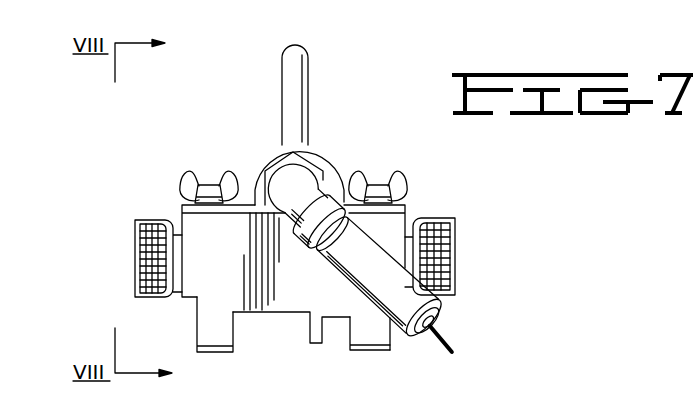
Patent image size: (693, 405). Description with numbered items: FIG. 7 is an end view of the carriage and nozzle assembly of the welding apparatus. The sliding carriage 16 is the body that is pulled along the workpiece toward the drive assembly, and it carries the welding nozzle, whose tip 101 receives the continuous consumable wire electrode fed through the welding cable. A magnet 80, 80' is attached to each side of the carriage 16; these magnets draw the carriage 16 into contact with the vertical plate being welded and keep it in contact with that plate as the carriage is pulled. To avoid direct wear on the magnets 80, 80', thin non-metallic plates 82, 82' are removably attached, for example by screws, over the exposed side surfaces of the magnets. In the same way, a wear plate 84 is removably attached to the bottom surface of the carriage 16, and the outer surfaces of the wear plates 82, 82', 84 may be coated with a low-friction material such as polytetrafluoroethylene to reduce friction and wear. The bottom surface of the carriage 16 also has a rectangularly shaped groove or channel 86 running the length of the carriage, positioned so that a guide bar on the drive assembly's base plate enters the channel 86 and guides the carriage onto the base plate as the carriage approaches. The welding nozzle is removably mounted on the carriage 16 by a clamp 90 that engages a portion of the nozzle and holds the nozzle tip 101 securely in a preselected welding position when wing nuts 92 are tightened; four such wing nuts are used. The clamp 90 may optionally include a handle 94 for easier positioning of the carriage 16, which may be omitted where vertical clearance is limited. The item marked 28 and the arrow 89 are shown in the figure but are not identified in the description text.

The carriage 16 is at (318, 295).
The cylinder 28 is at (338, 195).
The magnet 80 is at (124, 258).
The magnet 80' is at (464, 256).
The non-metallic plate 82 is at (126, 257).
The non-metallic plate 82' is at (464, 256).
The wear plate 84 is at (218, 353).
The channel 86 is at (351, 350).
The coupling 89 is at (342, 155).
The clamp 90 is at (310, 153).
The wing nuts 92 is at (190, 180).
The handle 94 is at (298, 75).
The tip 101 is at (440, 307).